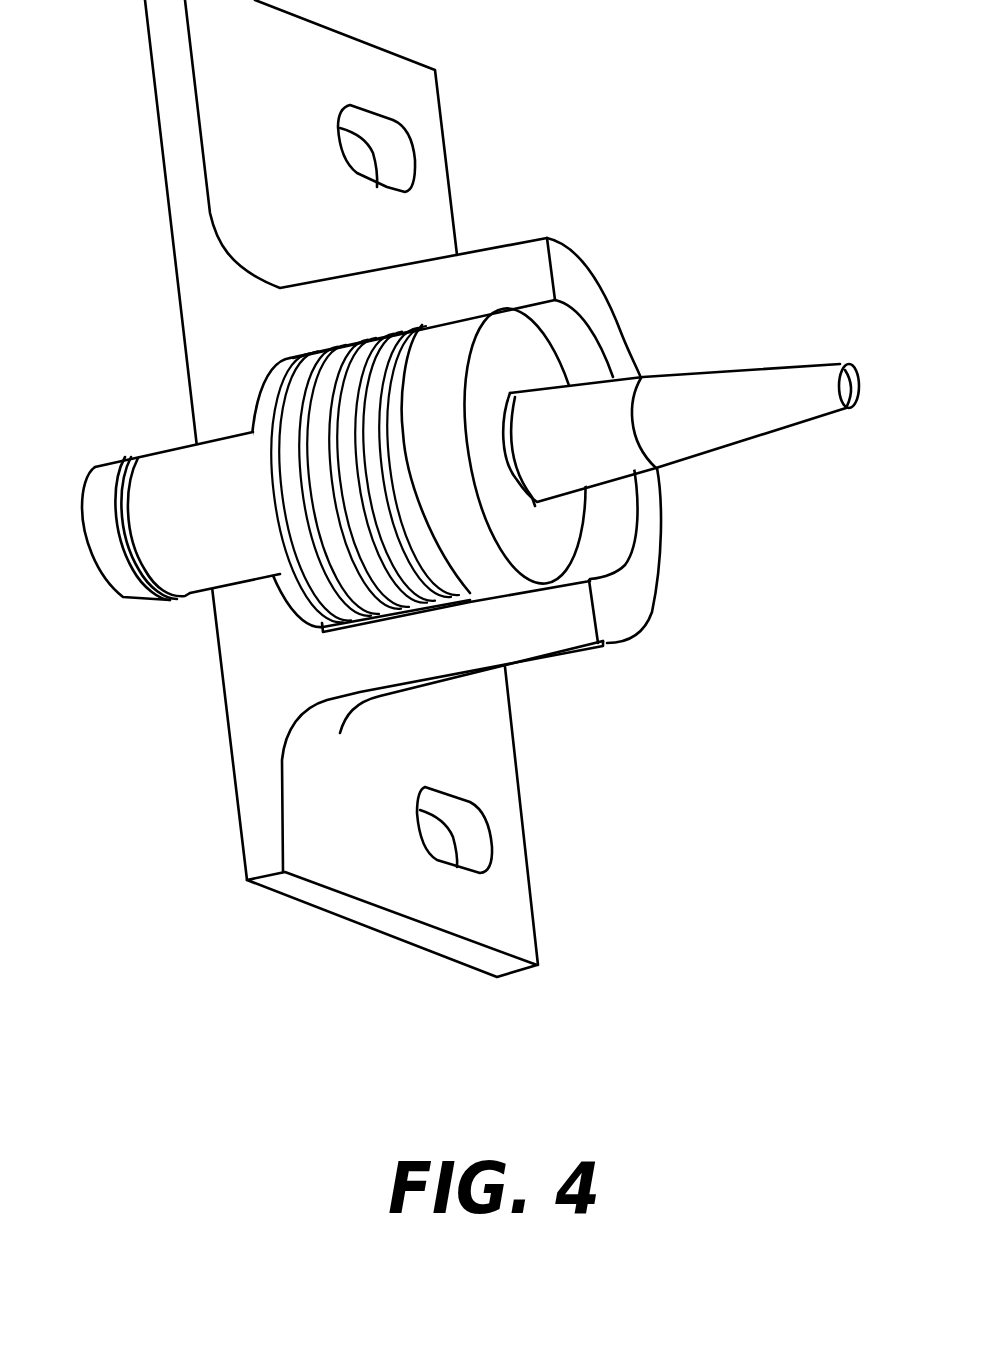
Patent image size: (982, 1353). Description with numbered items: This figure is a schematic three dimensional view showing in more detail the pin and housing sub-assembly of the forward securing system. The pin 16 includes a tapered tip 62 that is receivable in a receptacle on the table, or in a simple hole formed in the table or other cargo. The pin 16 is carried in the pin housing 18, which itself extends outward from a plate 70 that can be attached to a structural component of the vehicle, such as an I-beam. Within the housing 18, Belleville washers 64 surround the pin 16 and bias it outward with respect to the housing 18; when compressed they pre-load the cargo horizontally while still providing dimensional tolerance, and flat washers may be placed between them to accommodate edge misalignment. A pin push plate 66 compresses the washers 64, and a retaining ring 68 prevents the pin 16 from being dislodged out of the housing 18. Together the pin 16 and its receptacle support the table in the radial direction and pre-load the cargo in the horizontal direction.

The pin 16 is at (447, 448).
The pin housing 18 is at (550, 623).
The tapered tip 62 is at (797, 377).
The Belleville washers 64 is at (327, 573).
The pin push plate 66 is at (548, 533).
The retaining ring 68 is at (130, 558).
The plate 70 is at (513, 887).